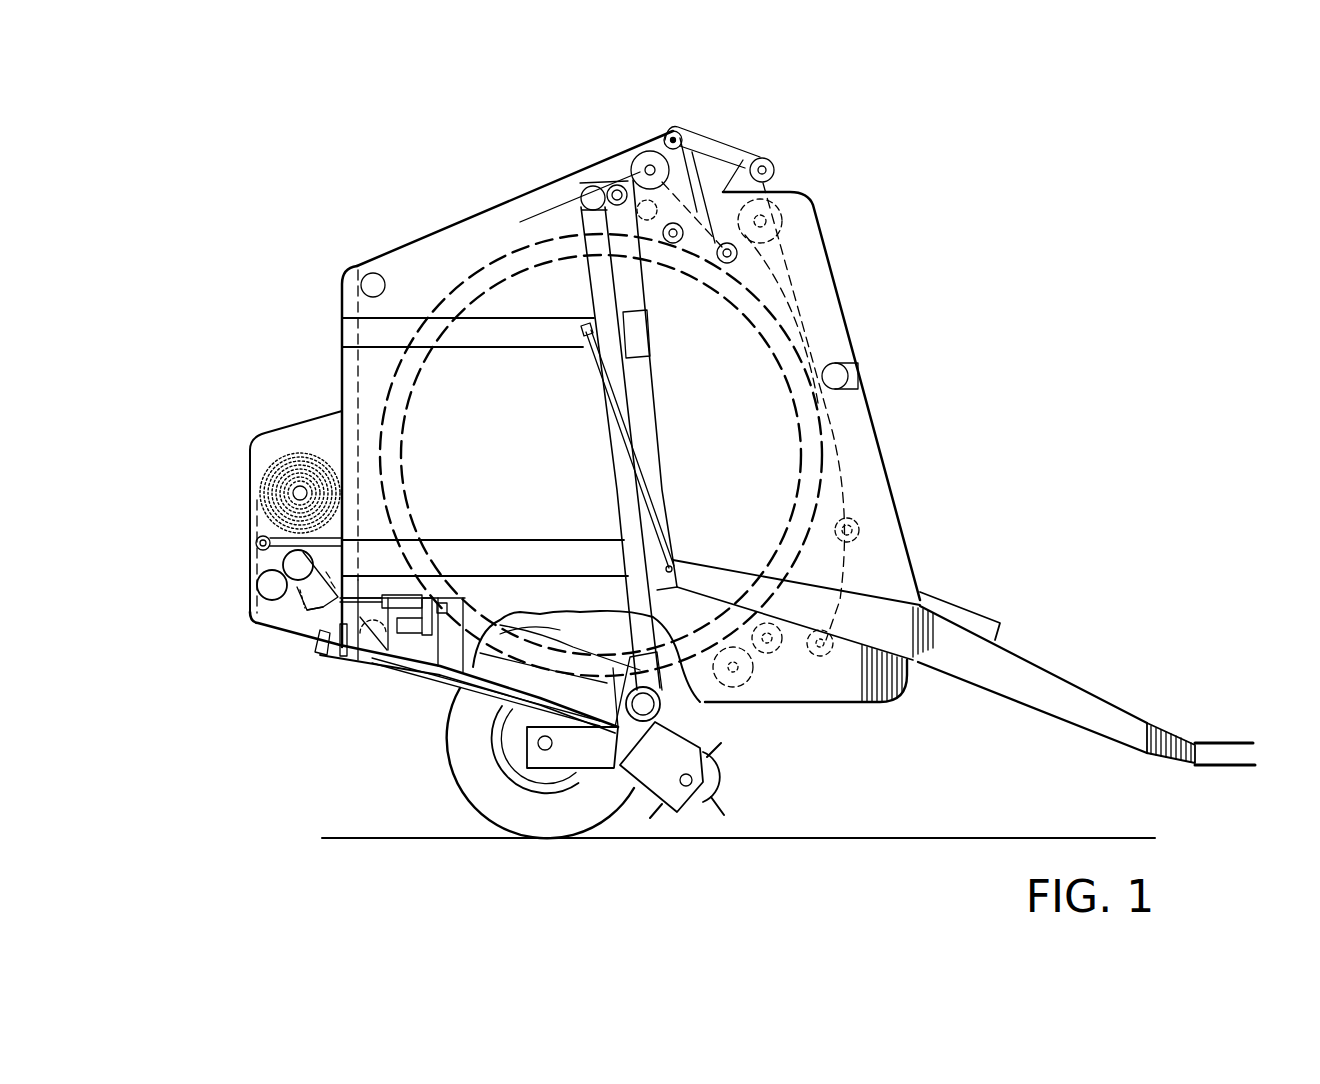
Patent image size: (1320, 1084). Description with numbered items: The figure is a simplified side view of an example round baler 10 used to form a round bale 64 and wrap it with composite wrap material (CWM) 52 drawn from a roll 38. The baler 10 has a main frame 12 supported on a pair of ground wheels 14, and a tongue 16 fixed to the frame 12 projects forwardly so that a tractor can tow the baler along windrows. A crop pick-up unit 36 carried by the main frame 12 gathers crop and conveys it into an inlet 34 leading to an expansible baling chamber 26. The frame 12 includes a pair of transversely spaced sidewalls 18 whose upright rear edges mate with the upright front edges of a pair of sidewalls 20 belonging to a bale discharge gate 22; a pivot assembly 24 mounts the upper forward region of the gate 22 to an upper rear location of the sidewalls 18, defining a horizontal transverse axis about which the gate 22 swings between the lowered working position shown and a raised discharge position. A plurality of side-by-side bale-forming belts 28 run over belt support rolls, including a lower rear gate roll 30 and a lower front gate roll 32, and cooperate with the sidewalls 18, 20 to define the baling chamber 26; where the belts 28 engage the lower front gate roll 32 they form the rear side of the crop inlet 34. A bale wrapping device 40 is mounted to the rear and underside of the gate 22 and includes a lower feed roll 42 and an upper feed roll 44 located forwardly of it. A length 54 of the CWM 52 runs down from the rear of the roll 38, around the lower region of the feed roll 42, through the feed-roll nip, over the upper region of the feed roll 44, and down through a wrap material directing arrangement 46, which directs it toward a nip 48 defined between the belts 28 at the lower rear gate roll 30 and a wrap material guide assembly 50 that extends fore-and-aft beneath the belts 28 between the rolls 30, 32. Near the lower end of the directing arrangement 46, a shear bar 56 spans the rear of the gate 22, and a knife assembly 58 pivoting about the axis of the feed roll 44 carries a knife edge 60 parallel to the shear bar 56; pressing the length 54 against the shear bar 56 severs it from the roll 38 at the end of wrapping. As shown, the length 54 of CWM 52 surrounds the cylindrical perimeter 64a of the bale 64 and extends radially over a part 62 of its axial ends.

The round baler 10 is at (973, 380).
The main frame 12 is at (848, 702).
The ground wheels 14 is at (458, 794).
The tongue 16 is at (1042, 660).
The sidewalls 18 is at (725, 482).
The sidewalls 20 is at (528, 428).
The bale discharge gate 22 is at (330, 310).
The pivot assembly 24 is at (613, 190).
The baling chamber 26 is at (536, 628).
The bale-forming belts 28 is at (383, 440).
The lower rear gate roll 30 is at (408, 700).
The lower front gate roll 32 is at (602, 712).
The crop inlet 34 is at (694, 712).
The crop pick-up unit 36 is at (720, 770).
The roll 38 is at (252, 449).
The bale wrapping device 40 is at (270, 643).
The lower feed roll 42 is at (263, 600).
The upper feed roll 44 is at (250, 562).
The wrap material directing arrangement 46 is at (340, 555).
The nip 48 is at (343, 664).
The wrap material guide assembly 50 is at (405, 705).
The CWM 52 is at (300, 452).
The length of CWM 54 is at (445, 303).
The shear bar 56 is at (327, 660).
The knife assembly 58 is at (288, 615).
The knife edge 60 is at (340, 600).
The part of the axial ends 62 is at (492, 278).
The round bale 64 is at (573, 650).
The cylindrical perimeter 64a is at (513, 236).